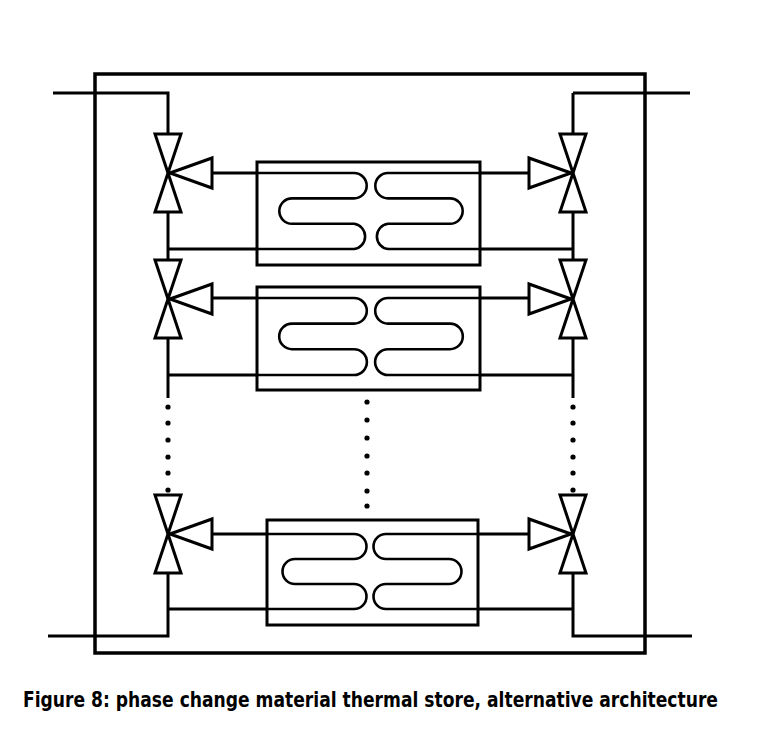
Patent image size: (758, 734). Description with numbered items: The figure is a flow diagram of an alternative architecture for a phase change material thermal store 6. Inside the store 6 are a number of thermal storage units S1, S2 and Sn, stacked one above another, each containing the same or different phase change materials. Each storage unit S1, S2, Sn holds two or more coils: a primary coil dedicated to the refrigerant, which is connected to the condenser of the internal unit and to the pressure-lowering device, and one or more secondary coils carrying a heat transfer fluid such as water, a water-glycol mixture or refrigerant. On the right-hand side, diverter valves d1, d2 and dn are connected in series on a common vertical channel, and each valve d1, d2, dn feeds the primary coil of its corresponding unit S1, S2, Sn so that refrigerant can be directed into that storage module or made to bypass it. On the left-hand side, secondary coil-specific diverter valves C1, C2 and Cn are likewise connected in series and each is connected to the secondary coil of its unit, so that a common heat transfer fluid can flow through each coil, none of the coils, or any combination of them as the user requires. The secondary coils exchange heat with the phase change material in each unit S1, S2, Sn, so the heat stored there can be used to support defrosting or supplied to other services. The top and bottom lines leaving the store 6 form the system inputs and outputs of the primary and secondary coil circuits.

The thermal store 6 is at (370, 339).
The secondary coil-specific diverter valve C1 is at (186, 191).
The secondary coil-specific diverter valve C2 is at (184, 317).
The secondary coil-specific diverter valve Cn is at (189, 552).
The diverter valve d1 is at (558, 191).
The diverter valve d2 is at (557, 317).
The diverter valve dn is at (556, 552).
The thermal storage unit S1 is at (368, 186).
The thermal storage unit S2 is at (368, 364).
The thermal storage unit Sn is at (372, 551).